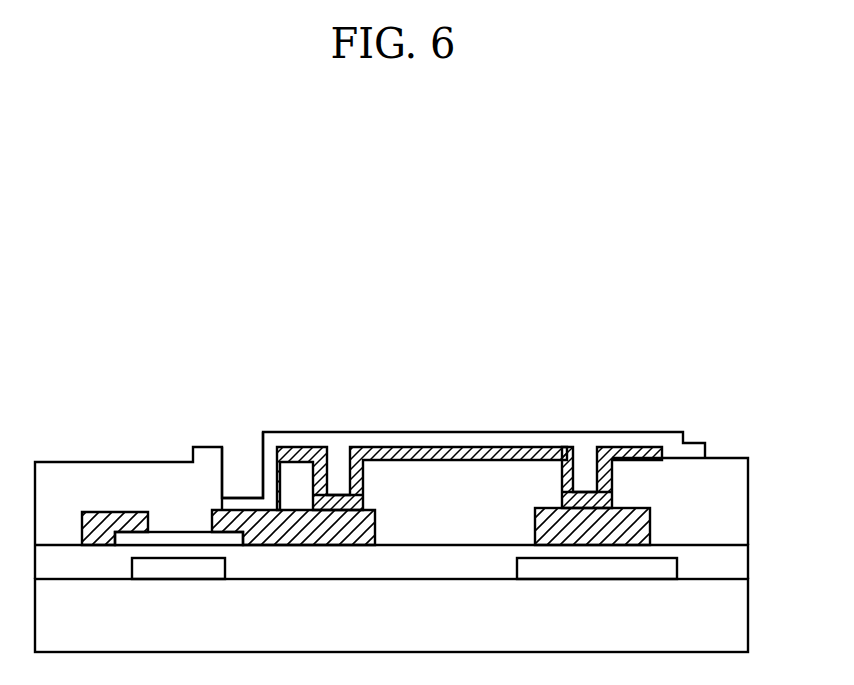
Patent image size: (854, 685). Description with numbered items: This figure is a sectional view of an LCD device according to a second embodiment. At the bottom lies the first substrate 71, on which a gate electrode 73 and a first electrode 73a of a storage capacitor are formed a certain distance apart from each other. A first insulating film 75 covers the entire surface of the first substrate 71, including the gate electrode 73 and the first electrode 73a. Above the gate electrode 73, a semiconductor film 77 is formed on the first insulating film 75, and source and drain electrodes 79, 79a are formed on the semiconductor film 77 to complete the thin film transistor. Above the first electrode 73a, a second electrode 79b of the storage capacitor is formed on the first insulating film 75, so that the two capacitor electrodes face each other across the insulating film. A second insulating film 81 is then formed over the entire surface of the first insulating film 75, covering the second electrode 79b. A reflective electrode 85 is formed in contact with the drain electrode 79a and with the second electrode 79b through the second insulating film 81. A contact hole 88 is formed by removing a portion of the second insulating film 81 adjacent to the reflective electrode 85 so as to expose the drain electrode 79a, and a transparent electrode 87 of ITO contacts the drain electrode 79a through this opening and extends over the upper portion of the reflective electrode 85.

The first substrate 71 is at (748, 612).
The gate electrode 73 is at (182, 580).
The first electrode of storage capacitor 73a is at (617, 579).
The first insulating film 75 is at (748, 560).
The semiconductor film 77 is at (163, 533).
The source electrode 79 is at (92, 512).
The drain electrode 79a is at (377, 523).
The second electrode of storage capacitor 79b is at (652, 520).
The second insulating film 81 is at (458, 478).
The reflective electrode 85 is at (435, 448).
The transparent electrode 87 is at (550, 432).
The contact hole 88 is at (248, 450).